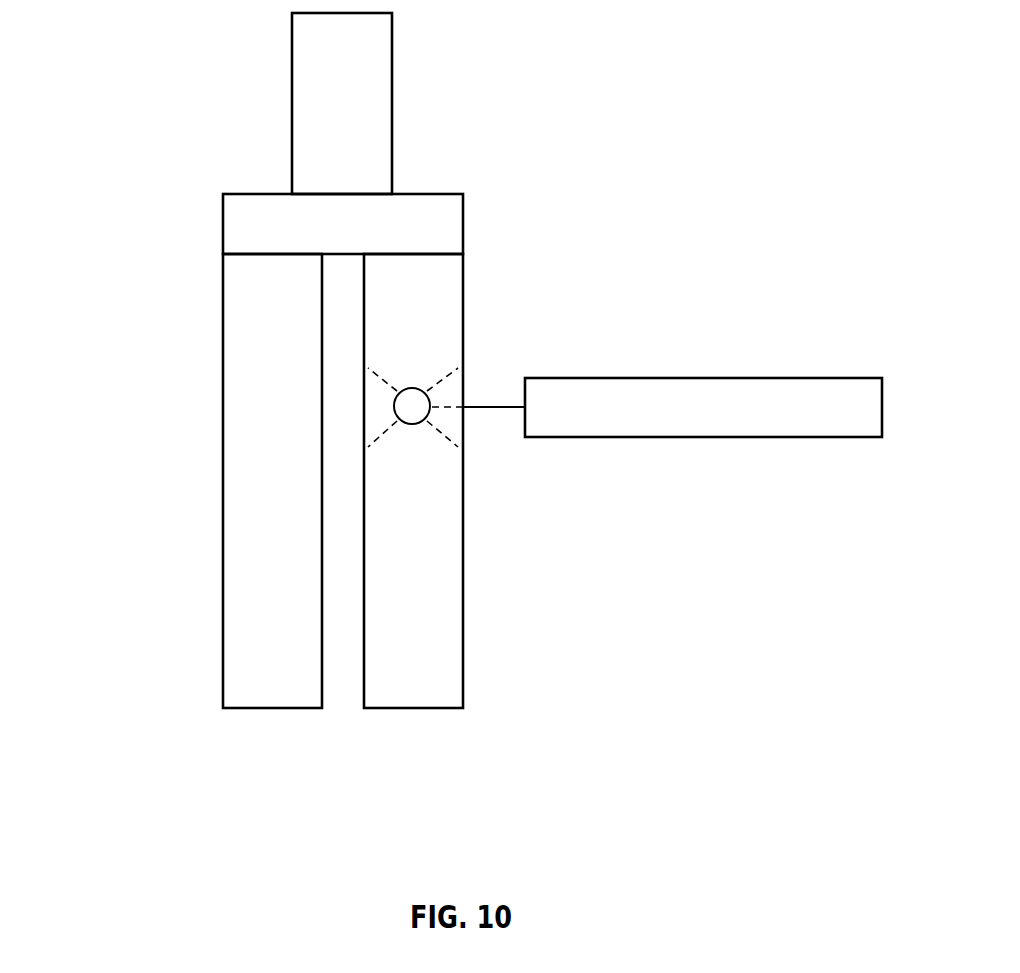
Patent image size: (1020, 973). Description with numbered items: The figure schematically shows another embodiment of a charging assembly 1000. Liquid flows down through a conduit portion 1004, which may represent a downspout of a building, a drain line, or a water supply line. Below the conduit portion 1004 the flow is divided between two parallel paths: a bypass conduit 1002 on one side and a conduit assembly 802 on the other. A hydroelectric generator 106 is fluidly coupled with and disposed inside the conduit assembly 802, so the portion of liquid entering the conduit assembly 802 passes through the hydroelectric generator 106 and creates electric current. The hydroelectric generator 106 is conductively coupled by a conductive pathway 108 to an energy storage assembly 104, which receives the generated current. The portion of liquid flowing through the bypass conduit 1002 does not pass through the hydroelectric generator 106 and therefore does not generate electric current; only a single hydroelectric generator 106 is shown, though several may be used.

The charging assembly 1000 is at (106, 133).
The conduit portion 1004 is at (393, 103).
The bypass conduit 1002 is at (220, 430).
The conduit assembly 802 is at (463, 578).
The hydroelectric generator 106 is at (410, 426).
The conductive pathway 108 is at (478, 408).
The energy storage assembly 104 is at (805, 438).